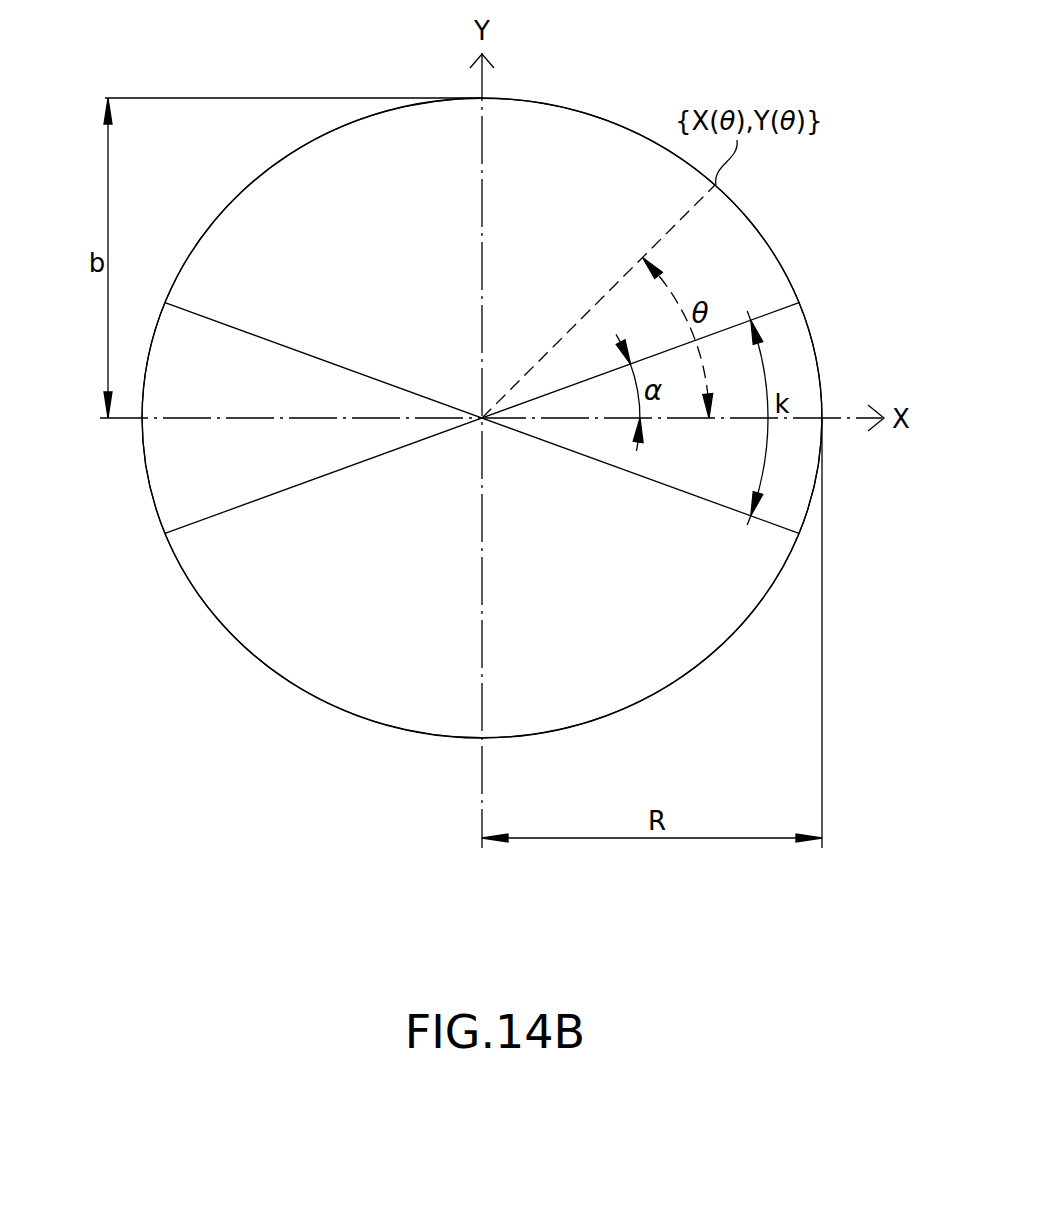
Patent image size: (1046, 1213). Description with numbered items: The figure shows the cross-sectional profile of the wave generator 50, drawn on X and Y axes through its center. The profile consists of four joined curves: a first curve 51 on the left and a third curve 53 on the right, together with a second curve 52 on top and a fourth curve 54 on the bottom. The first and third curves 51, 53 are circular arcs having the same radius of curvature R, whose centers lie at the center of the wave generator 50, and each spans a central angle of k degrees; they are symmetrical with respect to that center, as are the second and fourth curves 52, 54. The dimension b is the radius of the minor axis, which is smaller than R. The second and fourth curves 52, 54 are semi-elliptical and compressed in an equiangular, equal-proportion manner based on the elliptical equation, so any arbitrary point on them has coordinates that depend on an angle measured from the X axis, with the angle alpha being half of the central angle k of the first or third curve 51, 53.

The wave generator 50 is at (668, 632).
The first curve 51 is at (144, 452).
The second curve 52 is at (611, 117).
The third curve 53 is at (817, 350).
The fourth curve 54 is at (430, 735).